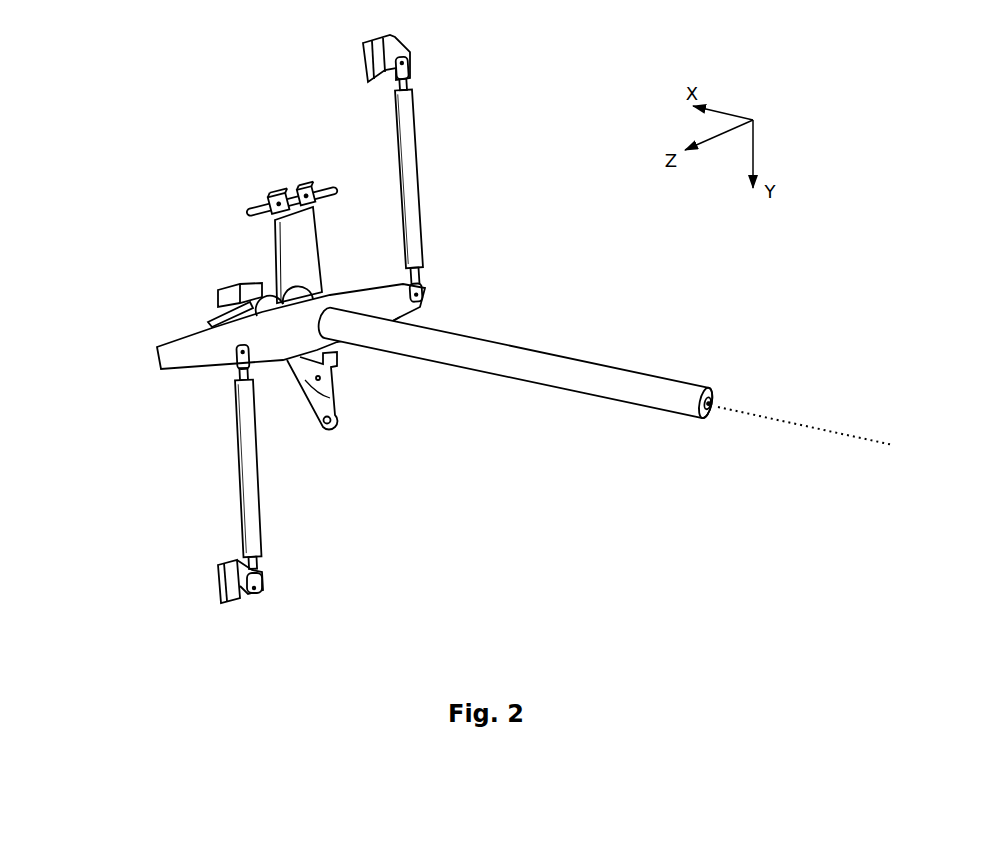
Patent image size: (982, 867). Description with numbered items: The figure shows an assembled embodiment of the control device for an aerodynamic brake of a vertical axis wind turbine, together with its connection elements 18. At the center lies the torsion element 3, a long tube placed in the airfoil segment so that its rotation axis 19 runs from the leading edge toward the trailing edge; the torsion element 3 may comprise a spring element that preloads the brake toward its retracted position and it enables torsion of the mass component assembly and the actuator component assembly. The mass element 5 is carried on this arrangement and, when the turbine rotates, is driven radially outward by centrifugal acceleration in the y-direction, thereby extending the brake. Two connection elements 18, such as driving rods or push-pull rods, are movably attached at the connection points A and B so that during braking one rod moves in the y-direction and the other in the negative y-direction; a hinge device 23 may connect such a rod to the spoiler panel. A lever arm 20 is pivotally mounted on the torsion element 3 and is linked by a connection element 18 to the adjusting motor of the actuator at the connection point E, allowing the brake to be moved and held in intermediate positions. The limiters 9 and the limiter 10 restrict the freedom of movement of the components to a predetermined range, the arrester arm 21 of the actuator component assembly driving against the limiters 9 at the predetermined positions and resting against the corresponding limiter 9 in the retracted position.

The torsion element 3 is at (607, 358).
The mass element 5 is at (200, 370).
The limiters 9 is at (248, 287).
The limiter 10 is at (372, 358).
The connection element 18 is at (360, 186).
The rotation axis of the torsion element 19 is at (808, 420).
The lever arm 20 is at (367, 408).
The arrester arm 21 is at (262, 300).
The hinge device 23 is at (427, 45).
The connection point A is at (282, 348).
The connection point B is at (457, 292).
The connection point for an actuator E is at (365, 423).